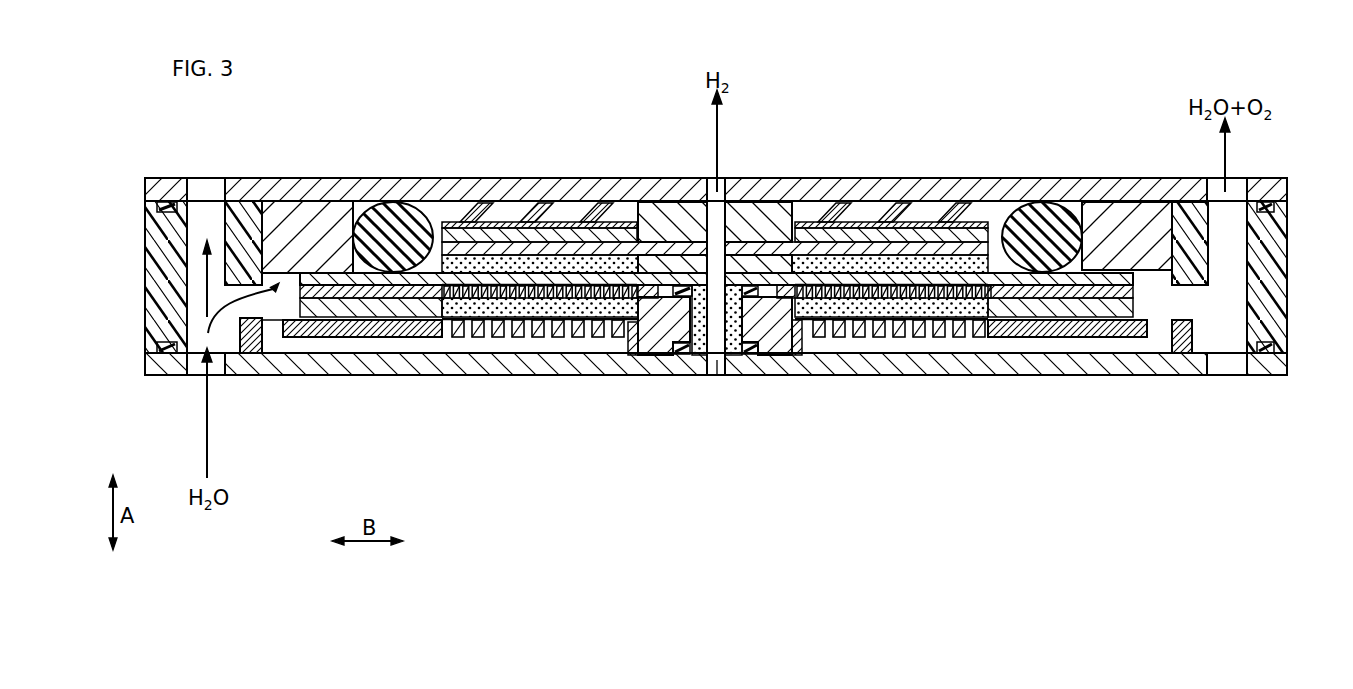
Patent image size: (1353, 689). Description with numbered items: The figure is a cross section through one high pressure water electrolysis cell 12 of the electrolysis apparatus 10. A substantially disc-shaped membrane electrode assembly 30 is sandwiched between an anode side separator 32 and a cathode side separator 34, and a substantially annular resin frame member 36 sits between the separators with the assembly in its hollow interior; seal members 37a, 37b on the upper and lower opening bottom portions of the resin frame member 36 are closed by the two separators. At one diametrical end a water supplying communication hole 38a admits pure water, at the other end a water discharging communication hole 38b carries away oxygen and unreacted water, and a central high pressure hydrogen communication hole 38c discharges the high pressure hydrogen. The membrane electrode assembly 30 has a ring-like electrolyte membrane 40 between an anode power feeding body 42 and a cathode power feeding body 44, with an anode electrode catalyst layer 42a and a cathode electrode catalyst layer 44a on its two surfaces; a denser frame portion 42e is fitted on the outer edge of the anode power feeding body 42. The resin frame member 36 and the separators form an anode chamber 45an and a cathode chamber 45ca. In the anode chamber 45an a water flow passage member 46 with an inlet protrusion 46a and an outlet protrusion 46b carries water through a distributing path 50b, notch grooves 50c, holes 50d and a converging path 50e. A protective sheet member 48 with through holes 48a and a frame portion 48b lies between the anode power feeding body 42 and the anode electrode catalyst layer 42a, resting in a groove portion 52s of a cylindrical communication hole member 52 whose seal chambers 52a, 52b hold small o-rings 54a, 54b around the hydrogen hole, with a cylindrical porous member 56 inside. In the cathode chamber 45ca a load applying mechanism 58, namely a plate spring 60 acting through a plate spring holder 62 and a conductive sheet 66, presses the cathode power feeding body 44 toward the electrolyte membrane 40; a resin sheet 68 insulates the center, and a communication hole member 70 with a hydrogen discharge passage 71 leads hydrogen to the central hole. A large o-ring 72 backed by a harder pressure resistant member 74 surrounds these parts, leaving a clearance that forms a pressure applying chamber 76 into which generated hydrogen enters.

The water electrolysis device 10 is at (1116, 72).
The high pressure water electrolysis cell 12 is at (1079, 72).
The membrane electrode assembly 30 is at (332, 262).
The anode side separator 32 is at (1262, 386).
The cathode side separator 34 is at (1262, 170).
The resin frame member 36 is at (141, 316).
The seal member 37a is at (168, 208).
The seal member 37b is at (165, 354).
The water supplying communication hole 38a is at (205, 366).
The water discharging communication hole 38b is at (1225, 368).
The high pressure hydrogen communication hole 38c is at (716, 362).
The electrolyte membrane 40 is at (430, 212).
The anode power feeding body 42 is at (506, 300).
The anode electrode catalyst layer 42a is at (487, 305).
The frame portion 42e is at (410, 335).
The cathode power feeding body 44 is at (542, 224).
The cathode electrode catalyst layer 44a is at (498, 214).
The cathode chamber 45ca is at (578, 212).
The anode chamber 45an is at (287, 335).
The water flow passage member 46 is at (1202, 321).
The inlet protrusion 46a is at (250, 335).
The outlet protrusion 46b is at (1193, 335).
The protective sheet member 48 is at (1060, 306).
The through holes 48a is at (977, 287).
The frame portion 48b is at (1092, 293).
The distributing path 50b is at (276, 332).
The notch grooves 50c is at (346, 355).
The holes 50d is at (607, 327).
The converging path 50e is at (1158, 332).
The communication hole member 52 is at (772, 364).
The seal chamber 52a is at (684, 265).
The seal chamber 52b is at (683, 357).
The groove portion 52s is at (648, 208).
The seal member 54a is at (678, 240).
The seal member 54b is at (690, 356).
The porous member 56 is at (737, 358).
The load applying mechanism 58 is at (917, 196).
The plate spring 60 is at (842, 230).
The plate spring holder 62 is at (878, 232).
The conductive sheet 66 is at (972, 250).
The resin sheet 68 is at (740, 213).
The communication hole member 70 is at (760, 204).
The hydrogen discharge passage 71 is at (665, 215).
The large o-ring 72 is at (388, 210).
The pressure resistant member 74 is at (288, 213).
The pressure applying chamber 76 is at (1003, 266).